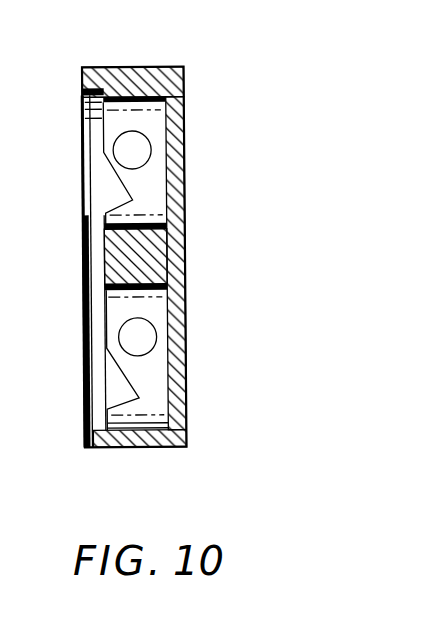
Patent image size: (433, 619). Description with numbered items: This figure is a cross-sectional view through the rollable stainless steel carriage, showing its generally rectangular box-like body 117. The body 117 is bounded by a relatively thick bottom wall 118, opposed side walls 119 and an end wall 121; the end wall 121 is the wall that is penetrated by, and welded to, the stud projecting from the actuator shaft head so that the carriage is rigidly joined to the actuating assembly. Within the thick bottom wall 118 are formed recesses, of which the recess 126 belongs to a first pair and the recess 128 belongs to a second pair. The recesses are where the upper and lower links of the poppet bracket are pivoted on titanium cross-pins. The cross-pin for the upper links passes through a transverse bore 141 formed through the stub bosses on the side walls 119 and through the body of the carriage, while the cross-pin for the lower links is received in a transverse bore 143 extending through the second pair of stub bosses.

The body 117 is at (181, 207).
The bottom wall 118 is at (160, 259).
The side walls 119 is at (93, 194).
The end wall 121 is at (142, 78).
The recess 126 is at (159, 121).
The recess 128 is at (162, 416).
The transverse bore 141 is at (147, 143).
The transverse bore 143 is at (149, 339).